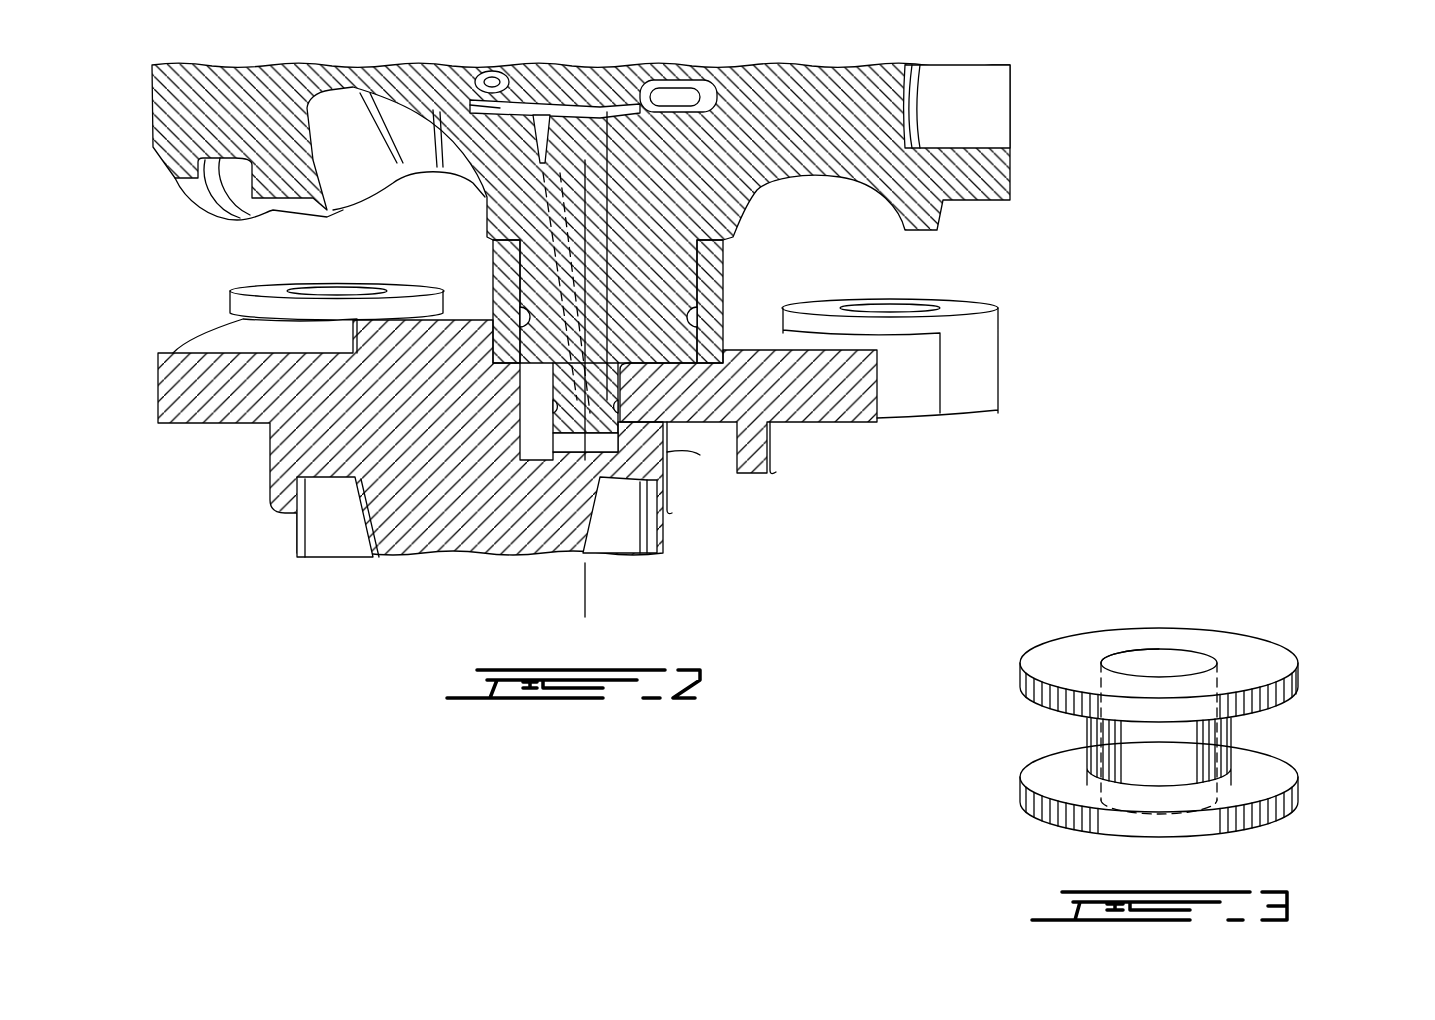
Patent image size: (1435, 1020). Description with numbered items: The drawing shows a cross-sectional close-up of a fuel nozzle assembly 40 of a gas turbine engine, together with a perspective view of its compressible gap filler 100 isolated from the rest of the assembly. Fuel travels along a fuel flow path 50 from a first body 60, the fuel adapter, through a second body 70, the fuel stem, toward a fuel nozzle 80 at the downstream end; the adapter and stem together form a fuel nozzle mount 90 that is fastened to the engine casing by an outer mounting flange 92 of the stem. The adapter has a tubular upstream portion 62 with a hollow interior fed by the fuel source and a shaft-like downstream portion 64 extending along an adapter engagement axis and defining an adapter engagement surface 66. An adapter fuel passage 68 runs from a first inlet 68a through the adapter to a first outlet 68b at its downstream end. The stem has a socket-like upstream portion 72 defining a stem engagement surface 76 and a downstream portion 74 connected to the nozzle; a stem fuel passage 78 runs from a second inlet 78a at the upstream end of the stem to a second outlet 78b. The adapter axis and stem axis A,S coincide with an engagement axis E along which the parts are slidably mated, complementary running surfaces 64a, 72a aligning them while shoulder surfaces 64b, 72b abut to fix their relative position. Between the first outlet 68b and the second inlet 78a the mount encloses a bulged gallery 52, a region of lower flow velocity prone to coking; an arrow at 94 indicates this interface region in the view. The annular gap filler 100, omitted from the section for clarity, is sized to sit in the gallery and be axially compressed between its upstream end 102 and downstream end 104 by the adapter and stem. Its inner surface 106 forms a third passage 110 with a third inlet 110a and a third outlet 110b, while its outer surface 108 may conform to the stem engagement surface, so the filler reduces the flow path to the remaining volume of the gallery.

In FIG. 2, the fuel nozzle assembly 40 is at (138, 52).
In FIG. 2, the fuel flow path 50 is at (535, 88).
In FIG. 2, the gallery 52 is at (536, 440).
In FIG. 2, the first body 60 is at (838, 118).
In FIG. 2, the upstream portion 62 is at (680, 92).
In FIG. 2, the downstream portion 64 is at (674, 180).
In FIG. 2, the running surface 64a is at (723, 285).
In FIG. 2, the shoulder surface 64b is at (675, 355).
In FIG. 2, the adapter engagement surface 66 is at (700, 455).
In FIG. 2, the adapter fuel passage 68 is at (530, 211).
In FIG. 2, the first inlet 68a is at (470, 105).
In FIG. 2, the first outlet 68b is at (540, 435).
In FIG. 2, the second body 70 is at (840, 405).
In FIG. 2, the upstream portion 72 is at (686, 492).
In FIG. 2, the running surface 72a is at (697, 240).
In FIG. 2, the shoulder surface 72b is at (697, 360).
In FIG. 2, the downstream portion 74 is at (245, 470).
In FIG. 2, the stem engagement surface 76 is at (600, 460).
In FIG. 2, the stem fuel passage 78 is at (537, 498).
In FIG. 2, the second inlet 78a is at (542, 458).
In FIG. 2, the second outlet 78b is at (455, 536).
In FIG. 2, the fuel nozzle 80 is at (268, 538).
In FIG. 2, the fuel nozzle mount 90 is at (1024, 237).
In FIG. 2, the outer mounting flange 92 is at (975, 385).
In FIG. 2, the gap 94 is at (755, 240).
In FIG. 3, the gap filler 100 is at (1244, 533).
In FIG. 3, the upstream end 102 is at (1268, 646).
In FIG. 3, the downstream end 104 is at (1245, 815).
In FIG. 3, the inner surface 106 is at (1215, 757).
In FIG. 3, the outer surface 108 is at (1298, 690).
In FIG. 3, the third passage 110 is at (1160, 640).
In FIG. 3, the third inlet 110a is at (1116, 653).
In FIG. 3, the third outlet 110b is at (1110, 812).
In FIG. 2, the adapter engagement axis and stem engagement axis A,S is at (588, 160).
In FIG. 2, the engagement axis E is at (587, 590).